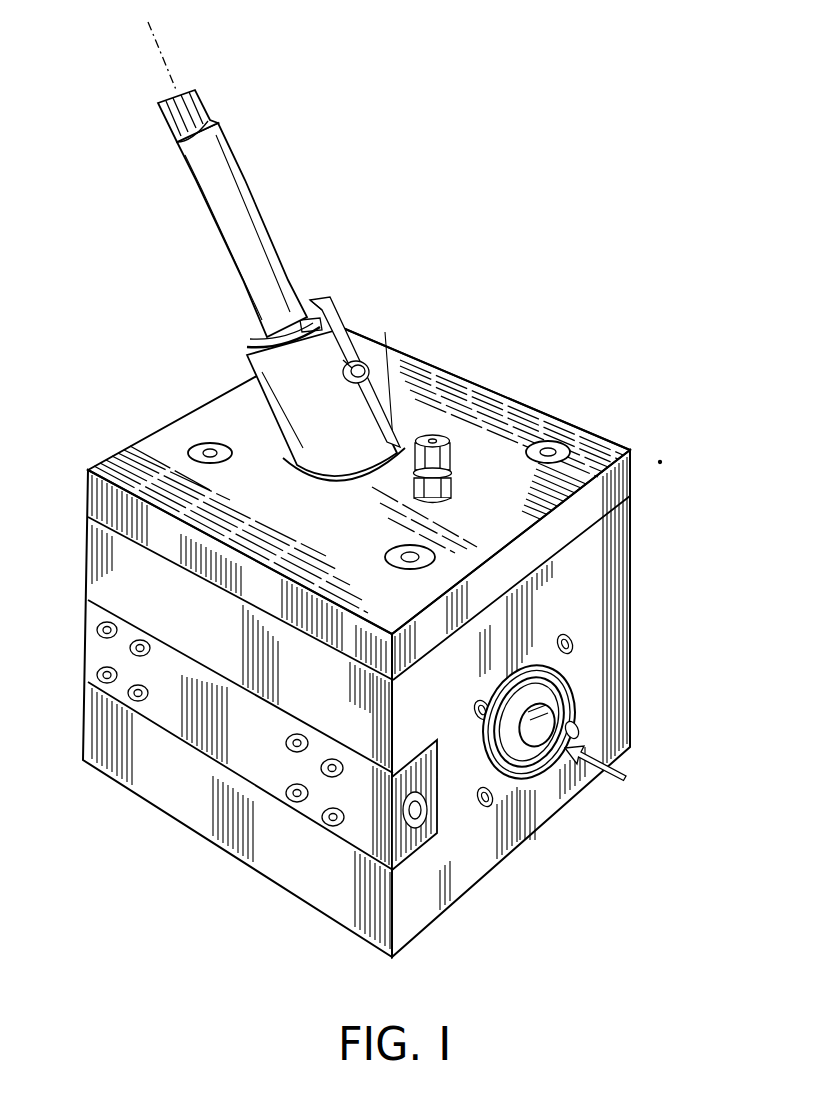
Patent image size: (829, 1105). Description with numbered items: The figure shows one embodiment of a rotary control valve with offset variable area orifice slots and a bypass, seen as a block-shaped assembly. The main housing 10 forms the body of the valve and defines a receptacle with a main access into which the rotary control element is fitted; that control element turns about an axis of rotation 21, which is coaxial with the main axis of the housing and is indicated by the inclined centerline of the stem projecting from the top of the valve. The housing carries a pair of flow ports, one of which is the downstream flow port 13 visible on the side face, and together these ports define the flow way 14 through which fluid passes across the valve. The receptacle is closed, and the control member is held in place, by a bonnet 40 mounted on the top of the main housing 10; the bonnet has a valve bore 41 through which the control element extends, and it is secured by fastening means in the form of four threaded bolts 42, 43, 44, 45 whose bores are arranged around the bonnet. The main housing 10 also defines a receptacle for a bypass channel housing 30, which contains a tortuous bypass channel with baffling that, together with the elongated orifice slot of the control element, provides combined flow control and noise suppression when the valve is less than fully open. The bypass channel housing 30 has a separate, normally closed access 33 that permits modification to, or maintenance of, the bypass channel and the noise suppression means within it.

The main housing 10 is at (87, 580).
The flow port 13 is at (522, 716).
The flow way 14 is at (621, 774).
The axis of rotation 21 is at (168, 68).
The bypass channel housing 30 is at (243, 763).
The access 33 is at (418, 815).
The bonnet 40 is at (485, 397).
The valve bore 41 is at (300, 290).
The threaded bolt 42 is at (207, 450).
The threaded bolt 43 is at (360, 358).
The threaded bolt 44 is at (430, 553).
The threaded bolt 45 is at (562, 447).